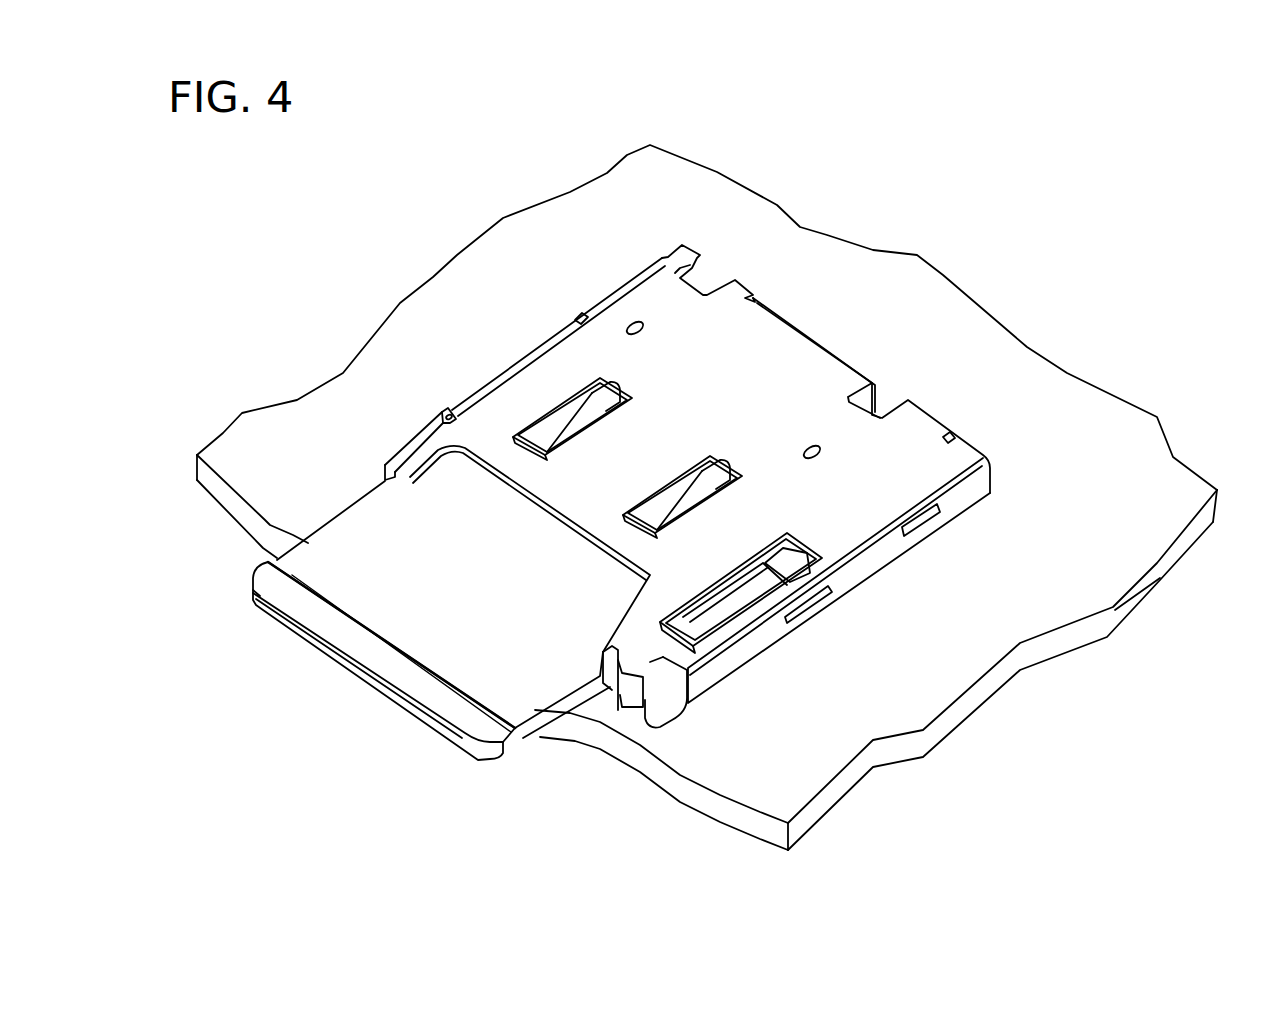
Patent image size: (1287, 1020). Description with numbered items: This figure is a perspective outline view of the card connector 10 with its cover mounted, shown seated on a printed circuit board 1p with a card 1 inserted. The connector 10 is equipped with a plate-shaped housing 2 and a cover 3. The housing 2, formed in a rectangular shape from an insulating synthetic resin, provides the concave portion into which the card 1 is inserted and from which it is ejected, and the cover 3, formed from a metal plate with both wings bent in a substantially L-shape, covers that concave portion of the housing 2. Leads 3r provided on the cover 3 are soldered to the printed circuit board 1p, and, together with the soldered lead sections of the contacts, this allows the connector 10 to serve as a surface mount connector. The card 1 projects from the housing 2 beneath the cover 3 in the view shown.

The connector 10 is at (804, 270).
The printed circuit board 1p is at (1165, 578).
The card 1 is at (247, 572).
The cover 3 is at (938, 411).
The housing 2 is at (625, 703).
The leads 3r is at (667, 713).